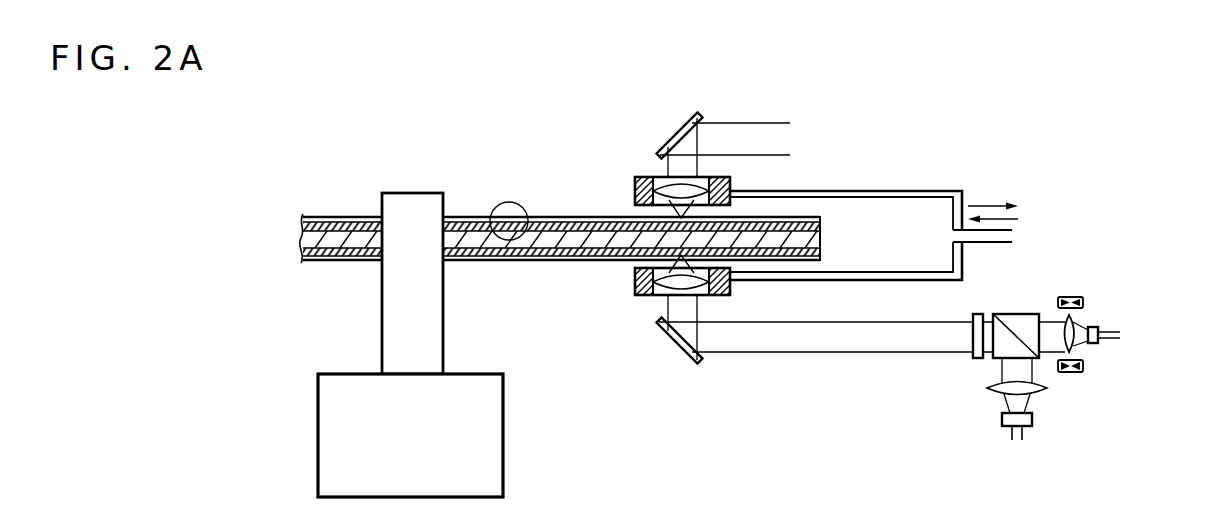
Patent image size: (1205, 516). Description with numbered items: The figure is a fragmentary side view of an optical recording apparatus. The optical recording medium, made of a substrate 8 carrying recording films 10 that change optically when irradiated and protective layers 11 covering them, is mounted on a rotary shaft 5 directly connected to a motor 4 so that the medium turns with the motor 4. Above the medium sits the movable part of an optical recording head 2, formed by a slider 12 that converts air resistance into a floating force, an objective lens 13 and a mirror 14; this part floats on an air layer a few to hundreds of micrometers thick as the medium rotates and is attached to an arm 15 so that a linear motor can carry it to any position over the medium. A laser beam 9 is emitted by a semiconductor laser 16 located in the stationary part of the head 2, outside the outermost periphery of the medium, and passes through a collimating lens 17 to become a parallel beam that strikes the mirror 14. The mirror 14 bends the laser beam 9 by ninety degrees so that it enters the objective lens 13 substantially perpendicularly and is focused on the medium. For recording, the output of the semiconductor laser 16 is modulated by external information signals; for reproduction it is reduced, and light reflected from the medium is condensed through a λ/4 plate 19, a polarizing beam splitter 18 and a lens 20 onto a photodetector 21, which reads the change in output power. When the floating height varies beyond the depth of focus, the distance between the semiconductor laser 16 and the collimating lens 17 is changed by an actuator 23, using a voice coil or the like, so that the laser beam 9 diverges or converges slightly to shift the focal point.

The optical recording head 2 is at (1058, 292).
The motor 4 is at (497, 479).
The rotary shaft 5 is at (418, 193).
The substrate 8 is at (323, 235).
The laser beam 9 is at (742, 140).
The recording films 10 is at (343, 256).
The protective layers 11 is at (360, 218).
The slider 12 is at (635, 186).
The objective lens 13 is at (662, 180).
The mirror 14 is at (683, 118).
The arm 15 is at (932, 191).
The semiconductor laser 16 is at (1099, 322).
The collimating lens 17 is at (1075, 336).
The polarizing beam splitter 18 is at (1022, 314).
The λ/4 plate 19 is at (978, 314).
The lens 20 is at (1000, 392).
The photodetector 21 is at (1033, 420).
The actuator 23 is at (1071, 373).